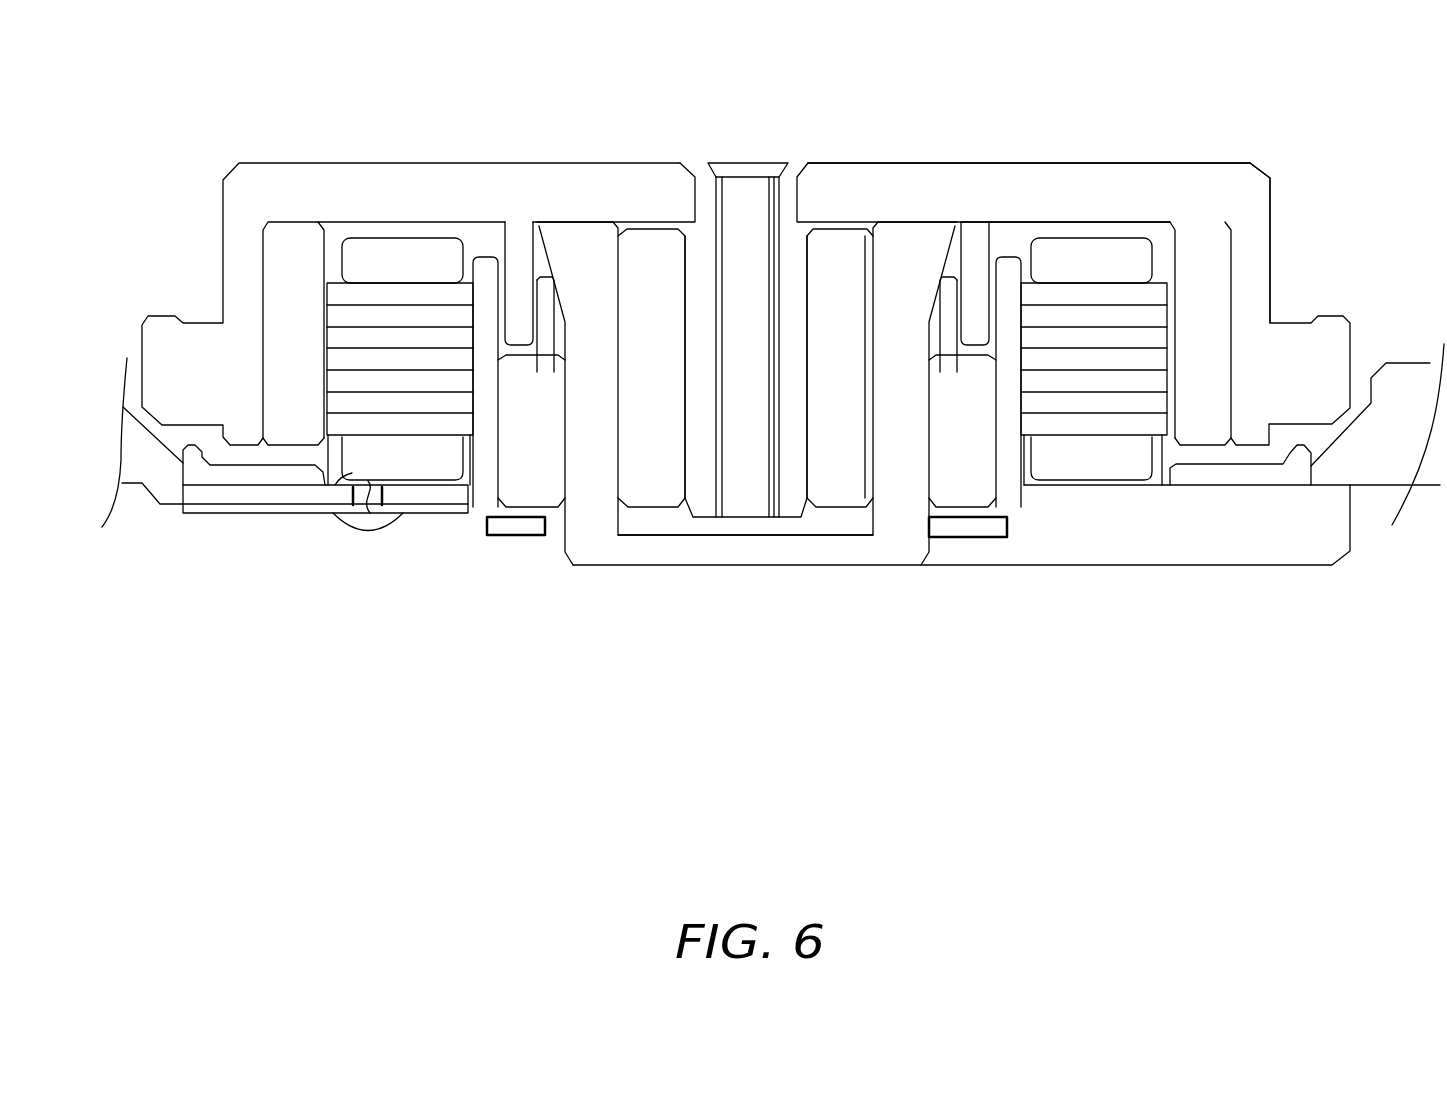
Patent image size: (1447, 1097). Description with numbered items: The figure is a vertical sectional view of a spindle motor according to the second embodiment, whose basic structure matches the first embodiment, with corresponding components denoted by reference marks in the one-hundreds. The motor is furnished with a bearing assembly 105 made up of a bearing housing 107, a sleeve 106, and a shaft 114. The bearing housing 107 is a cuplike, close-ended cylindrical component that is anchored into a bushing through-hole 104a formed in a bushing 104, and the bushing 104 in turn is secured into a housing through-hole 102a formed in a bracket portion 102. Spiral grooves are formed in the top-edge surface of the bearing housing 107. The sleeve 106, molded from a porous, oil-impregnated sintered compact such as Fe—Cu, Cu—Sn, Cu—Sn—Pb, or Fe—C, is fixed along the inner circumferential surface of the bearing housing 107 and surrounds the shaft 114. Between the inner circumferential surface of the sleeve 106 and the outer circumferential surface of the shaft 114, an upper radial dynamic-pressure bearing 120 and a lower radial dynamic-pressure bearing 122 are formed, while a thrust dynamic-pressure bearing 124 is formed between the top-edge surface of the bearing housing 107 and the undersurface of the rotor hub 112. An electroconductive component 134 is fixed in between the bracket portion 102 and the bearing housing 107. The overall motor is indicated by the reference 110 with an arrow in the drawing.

The bracket portion 102 is at (1189, 525).
The housing through-hole 102a is at (500, 388).
The bushing 104 is at (968, 405).
The bushing through-hole 104a is at (565, 427).
The bearing assembly 105 is at (749, 614).
The sleeve 106 is at (645, 323).
The bearing housing 107 is at (907, 405).
The housing assembly 110 is at (1278, 159).
The rotor hub 112 is at (988, 203).
The shaft 114 is at (748, 205).
The upper radial dynamic-pressure bearing 120 is at (683, 283).
The lower radial dynamic-pressure bearing 122 is at (685, 447).
The thrust dynamic-pressure bearing 124 is at (587, 222).
The electroconductive component 134 is at (525, 526).